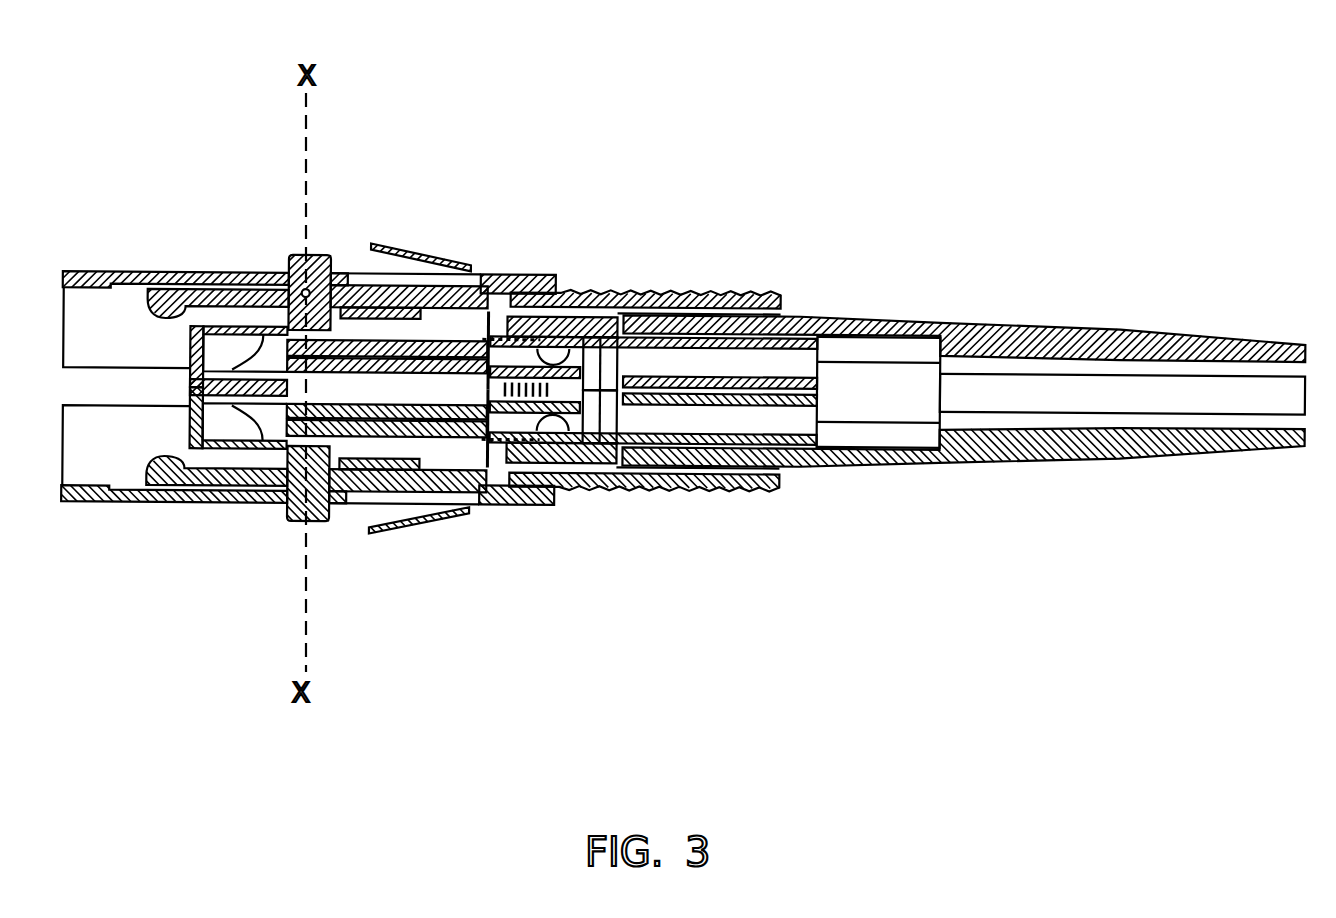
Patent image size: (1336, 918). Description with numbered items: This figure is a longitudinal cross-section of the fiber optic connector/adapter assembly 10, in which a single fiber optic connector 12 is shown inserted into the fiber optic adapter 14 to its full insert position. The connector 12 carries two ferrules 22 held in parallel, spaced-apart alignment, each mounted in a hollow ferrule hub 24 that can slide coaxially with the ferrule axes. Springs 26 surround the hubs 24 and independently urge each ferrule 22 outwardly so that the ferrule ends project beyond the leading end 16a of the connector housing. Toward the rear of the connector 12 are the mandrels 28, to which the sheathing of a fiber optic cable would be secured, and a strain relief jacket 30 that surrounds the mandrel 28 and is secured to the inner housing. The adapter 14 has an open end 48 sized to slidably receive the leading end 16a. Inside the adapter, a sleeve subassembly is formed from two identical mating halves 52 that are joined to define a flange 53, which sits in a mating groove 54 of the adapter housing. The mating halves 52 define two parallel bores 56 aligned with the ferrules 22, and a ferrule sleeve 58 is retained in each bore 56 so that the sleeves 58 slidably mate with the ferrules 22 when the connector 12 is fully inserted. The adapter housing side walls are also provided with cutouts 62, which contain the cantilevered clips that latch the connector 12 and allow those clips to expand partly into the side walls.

The fiber optic connector/adapter assembly 10 is at (863, 247).
The fiber optic connector 12 is at (1050, 323).
The fiber optic adapter 14 is at (99, 270).
The leading end 16a is at (357, 318).
The ferrule 22 is at (464, 340).
The ferrule hub 24 is at (553, 352).
The spring 26 is at (488, 338).
The mandrel 28 is at (817, 390).
The strain relief jacket 30 is at (1207, 333).
The open end 48 is at (556, 272).
The mating half 52 is at (253, 450).
The flange 53 is at (300, 290).
The mating groove 54 is at (286, 258).
The bore 56 is at (215, 352).
The ferrule sleeve 58 is at (215, 398).
The cutout 62 is at (148, 285).